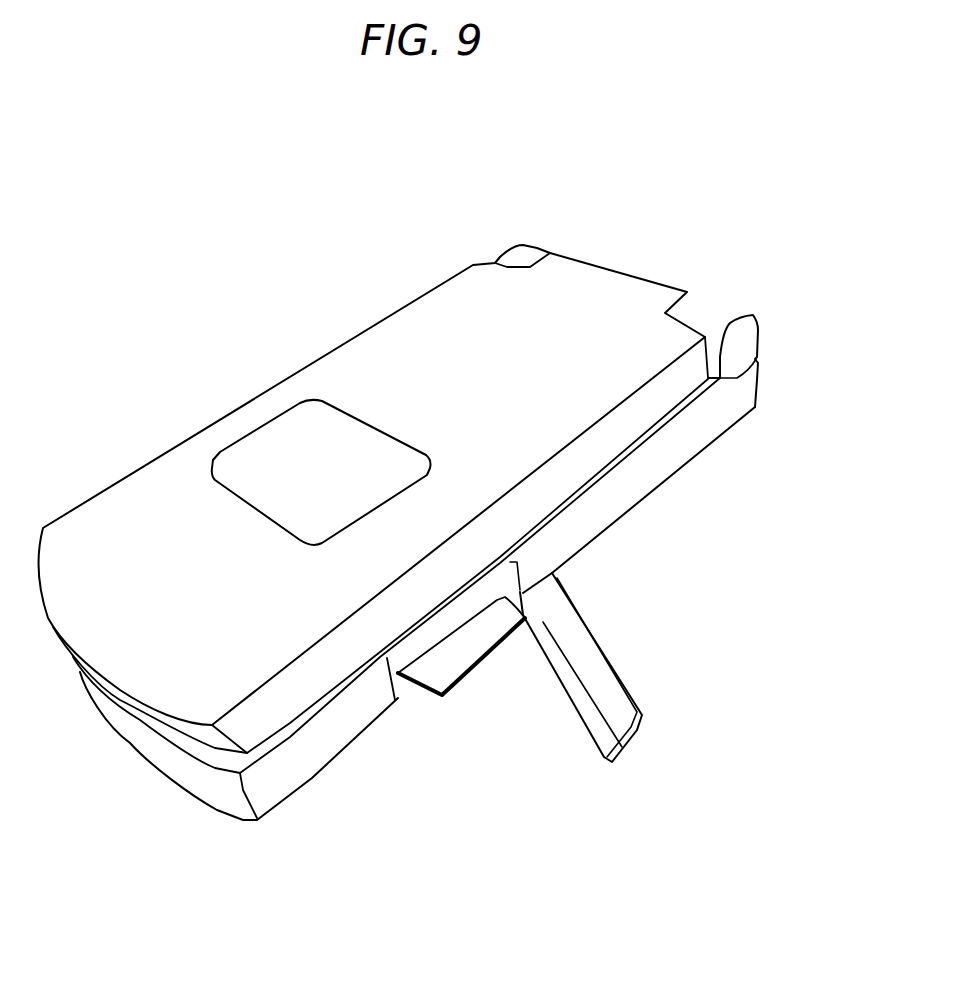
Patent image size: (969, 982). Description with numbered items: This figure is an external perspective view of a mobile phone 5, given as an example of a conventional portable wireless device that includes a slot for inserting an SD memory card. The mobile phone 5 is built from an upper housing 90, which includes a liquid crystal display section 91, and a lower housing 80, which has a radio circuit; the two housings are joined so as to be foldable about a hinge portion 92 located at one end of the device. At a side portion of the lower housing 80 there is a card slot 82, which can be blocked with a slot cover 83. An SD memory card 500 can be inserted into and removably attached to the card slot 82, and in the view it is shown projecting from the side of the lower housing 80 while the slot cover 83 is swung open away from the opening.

The mobile phone 5 is at (143, 226).
The lower housing 80 is at (657, 485).
The card slot 82 is at (432, 647).
The slot cover 83 is at (617, 668).
The upper housing 90 is at (363, 332).
The liquid crystal display section 91 is at (288, 410).
The hinge portion 92 is at (759, 333).
The SD memory card 500 is at (468, 673).